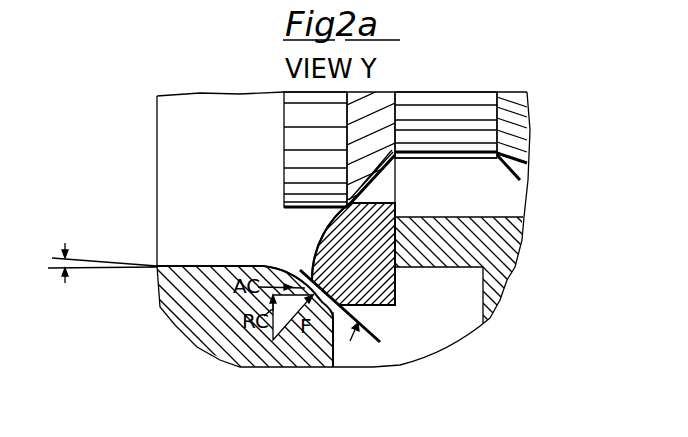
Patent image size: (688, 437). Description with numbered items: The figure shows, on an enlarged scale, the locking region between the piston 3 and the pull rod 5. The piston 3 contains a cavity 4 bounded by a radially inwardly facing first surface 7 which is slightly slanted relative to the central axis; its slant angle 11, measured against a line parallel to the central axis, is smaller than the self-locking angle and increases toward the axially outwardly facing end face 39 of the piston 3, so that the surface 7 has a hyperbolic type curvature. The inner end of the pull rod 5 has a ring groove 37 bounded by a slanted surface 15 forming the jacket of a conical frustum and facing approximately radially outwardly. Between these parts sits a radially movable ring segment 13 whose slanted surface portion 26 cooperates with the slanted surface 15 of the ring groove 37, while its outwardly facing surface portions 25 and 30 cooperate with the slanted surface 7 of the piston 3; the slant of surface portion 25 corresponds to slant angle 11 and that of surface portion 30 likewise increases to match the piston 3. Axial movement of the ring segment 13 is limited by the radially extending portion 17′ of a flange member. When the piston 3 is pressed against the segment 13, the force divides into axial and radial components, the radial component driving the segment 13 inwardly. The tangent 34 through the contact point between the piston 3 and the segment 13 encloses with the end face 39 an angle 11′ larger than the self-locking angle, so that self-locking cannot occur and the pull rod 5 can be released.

The piston 3 is at (203, 277).
The cavity 4 is at (180, 120).
The pull rod 5 is at (293, 118).
The first surface 7 is at (167, 265).
The slant angle 11 is at (53, 260).
The angle 11′ is at (353, 342).
The ring segment 13 is at (378, 280).
The slanted surface 15 is at (377, 178).
The radially extending portion 17′ is at (493, 307).
The surface portion 25 is at (383, 307).
The slanted surface portion 26 is at (322, 234).
The surface portion 30 is at (310, 280).
The tangent 34 is at (377, 343).
The ring groove 37 is at (462, 160).
The end face 39 is at (333, 347).